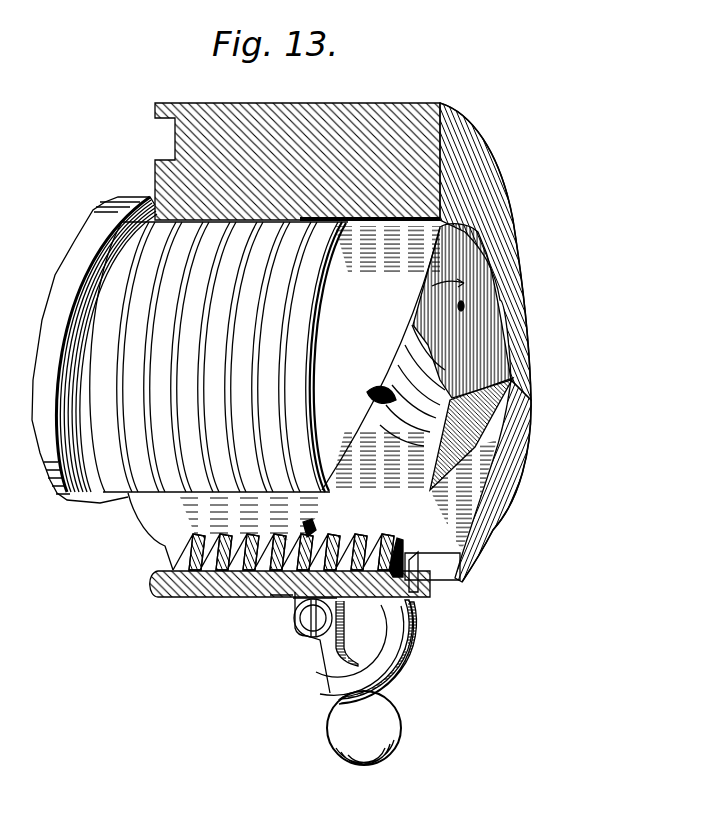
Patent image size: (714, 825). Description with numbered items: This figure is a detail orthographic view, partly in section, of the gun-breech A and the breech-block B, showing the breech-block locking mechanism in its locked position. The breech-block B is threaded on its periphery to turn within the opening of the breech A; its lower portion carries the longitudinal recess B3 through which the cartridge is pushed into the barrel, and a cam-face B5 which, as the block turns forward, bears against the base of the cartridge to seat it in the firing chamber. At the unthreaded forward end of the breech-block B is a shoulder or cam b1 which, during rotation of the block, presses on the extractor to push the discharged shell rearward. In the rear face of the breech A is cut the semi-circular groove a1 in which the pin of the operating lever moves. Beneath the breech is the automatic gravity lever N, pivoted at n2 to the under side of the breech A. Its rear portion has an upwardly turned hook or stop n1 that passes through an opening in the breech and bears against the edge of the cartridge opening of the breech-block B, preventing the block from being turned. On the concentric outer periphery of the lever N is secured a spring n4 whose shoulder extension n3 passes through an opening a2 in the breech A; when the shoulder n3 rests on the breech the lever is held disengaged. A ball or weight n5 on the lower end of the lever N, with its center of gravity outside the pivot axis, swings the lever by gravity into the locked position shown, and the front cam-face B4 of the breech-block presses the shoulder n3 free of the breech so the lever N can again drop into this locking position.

The semi-circular groove a1 is at (174, 139).
The opening in the breech a2 is at (432, 566).
The gun-breech A is at (196, 583).
The breech-block B is at (236, 383).
The shoulder or cam b1 is at (437, 230).
The longitudinal recess B3 is at (413, 490).
The front cam-face B4 is at (453, 478).
The cam-face B5 is at (406, 385).
The hook or stop n1 is at (290, 527).
The pivot n2 is at (304, 631).
The shoulder extension n3 is at (418, 580).
The spring n4 is at (420, 628).
The ball or weight n5 is at (364, 728).
The automatic gravity lever N is at (345, 670).